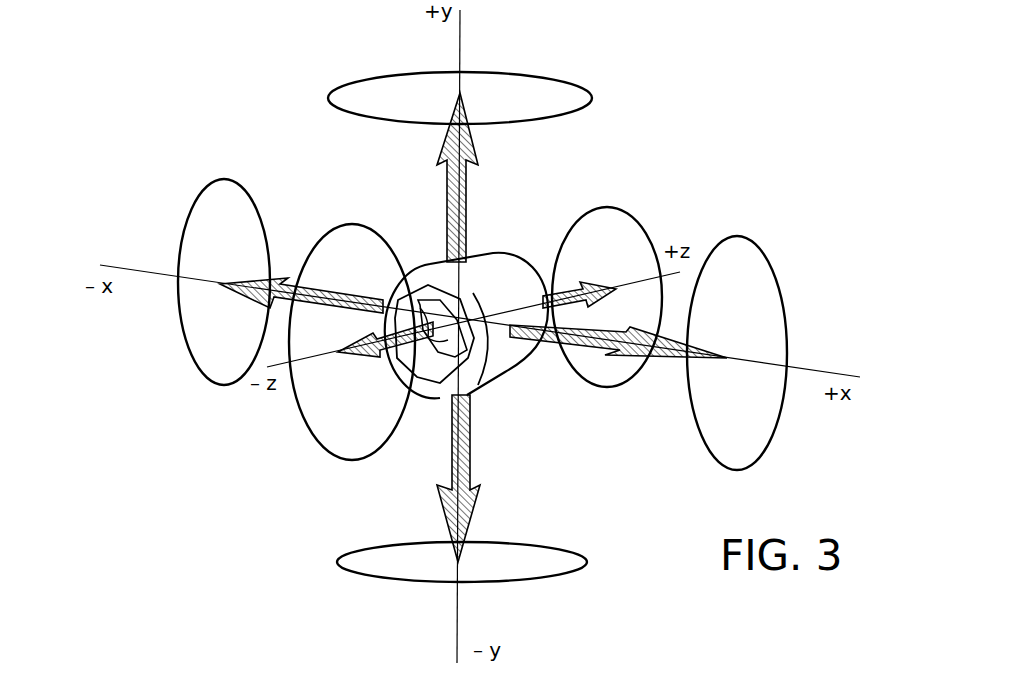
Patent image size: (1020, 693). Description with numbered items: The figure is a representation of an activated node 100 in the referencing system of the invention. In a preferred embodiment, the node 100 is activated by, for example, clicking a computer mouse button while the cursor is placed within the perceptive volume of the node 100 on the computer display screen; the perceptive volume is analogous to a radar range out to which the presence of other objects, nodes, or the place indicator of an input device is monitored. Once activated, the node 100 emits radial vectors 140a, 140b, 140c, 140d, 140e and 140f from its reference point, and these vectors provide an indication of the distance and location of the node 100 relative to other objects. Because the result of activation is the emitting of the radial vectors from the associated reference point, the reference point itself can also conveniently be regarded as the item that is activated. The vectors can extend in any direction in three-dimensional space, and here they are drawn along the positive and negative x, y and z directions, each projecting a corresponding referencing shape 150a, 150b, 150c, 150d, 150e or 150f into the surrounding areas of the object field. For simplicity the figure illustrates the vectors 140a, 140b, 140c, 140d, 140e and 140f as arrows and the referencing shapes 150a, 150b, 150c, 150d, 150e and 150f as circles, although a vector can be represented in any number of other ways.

The activated node 100 is at (500, 362).
The radial vector 140a is at (545, 342).
The radial vector 140b is at (468, 455).
The radial vector 140c is at (283, 280).
The radial vector 140d is at (467, 176).
The radial vector 140e is at (567, 292).
The radial vector 140f is at (353, 360).
The referencing shape 150a is at (787, 300).
The referencing shape 150b is at (545, 543).
The referencing shape 150c is at (195, 368).
The referencing shape 150d is at (585, 90).
The referencing shape 150e is at (613, 206).
The referencing shape 150f is at (307, 435).